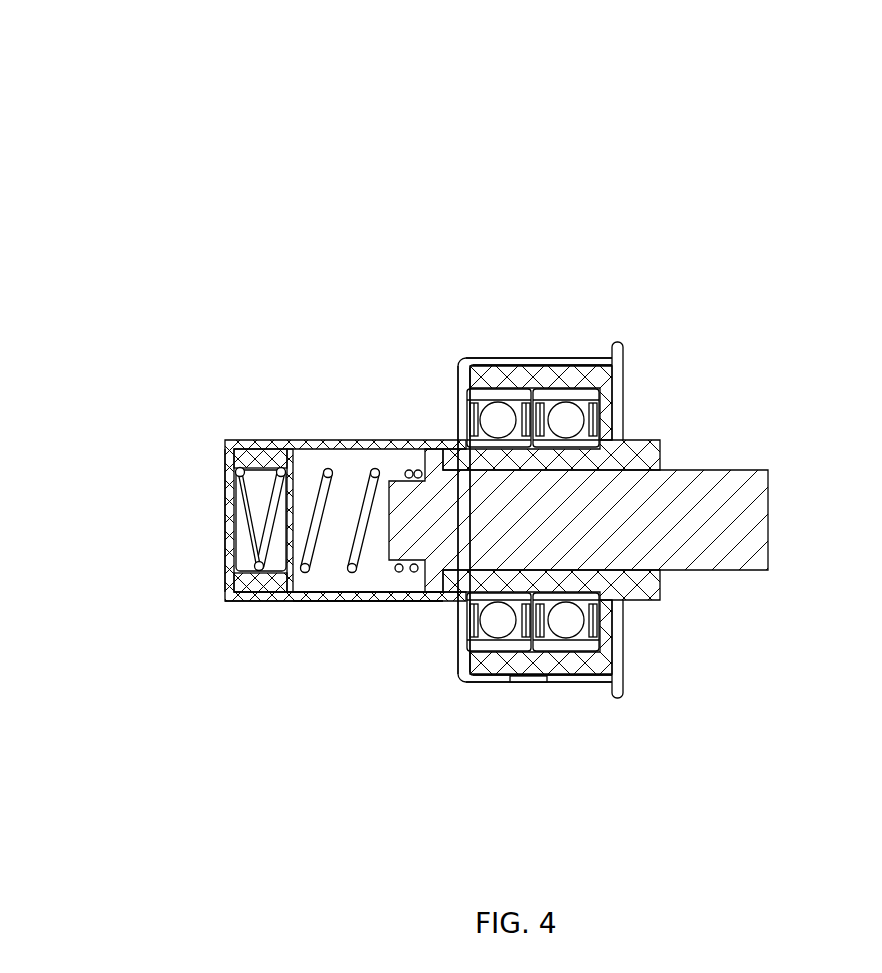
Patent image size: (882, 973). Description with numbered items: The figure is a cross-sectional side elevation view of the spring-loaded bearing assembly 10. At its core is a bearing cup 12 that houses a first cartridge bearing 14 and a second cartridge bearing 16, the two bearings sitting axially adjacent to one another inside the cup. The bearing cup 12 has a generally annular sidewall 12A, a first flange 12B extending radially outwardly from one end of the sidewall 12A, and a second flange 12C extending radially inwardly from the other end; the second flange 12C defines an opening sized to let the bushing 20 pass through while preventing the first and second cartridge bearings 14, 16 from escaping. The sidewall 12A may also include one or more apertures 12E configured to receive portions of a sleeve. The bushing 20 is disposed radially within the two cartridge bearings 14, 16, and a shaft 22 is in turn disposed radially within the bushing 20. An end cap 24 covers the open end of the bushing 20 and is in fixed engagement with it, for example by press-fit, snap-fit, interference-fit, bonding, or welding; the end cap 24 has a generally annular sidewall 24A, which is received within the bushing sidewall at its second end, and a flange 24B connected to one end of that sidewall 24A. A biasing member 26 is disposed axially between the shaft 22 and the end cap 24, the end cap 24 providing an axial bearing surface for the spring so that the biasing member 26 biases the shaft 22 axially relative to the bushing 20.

The spring-loaded bearing assembly 10 is at (379, 178).
The bearing cup 12 is at (463, 378).
The annular sidewall 12A is at (577, 355).
The first flange 12B is at (625, 338).
The second flange 12C is at (457, 395).
The apertures 12E is at (532, 685).
The first cartridge bearing 14 is at (508, 395).
The second cartridge bearing 16 is at (558, 395).
The bushing 20 is at (397, 595).
The shaft 22 is at (710, 482).
The end cap 24 is at (230, 462).
The annular sidewall 24A is at (263, 592).
The flange 24B is at (223, 527).
The biasing member 26 is at (328, 473).